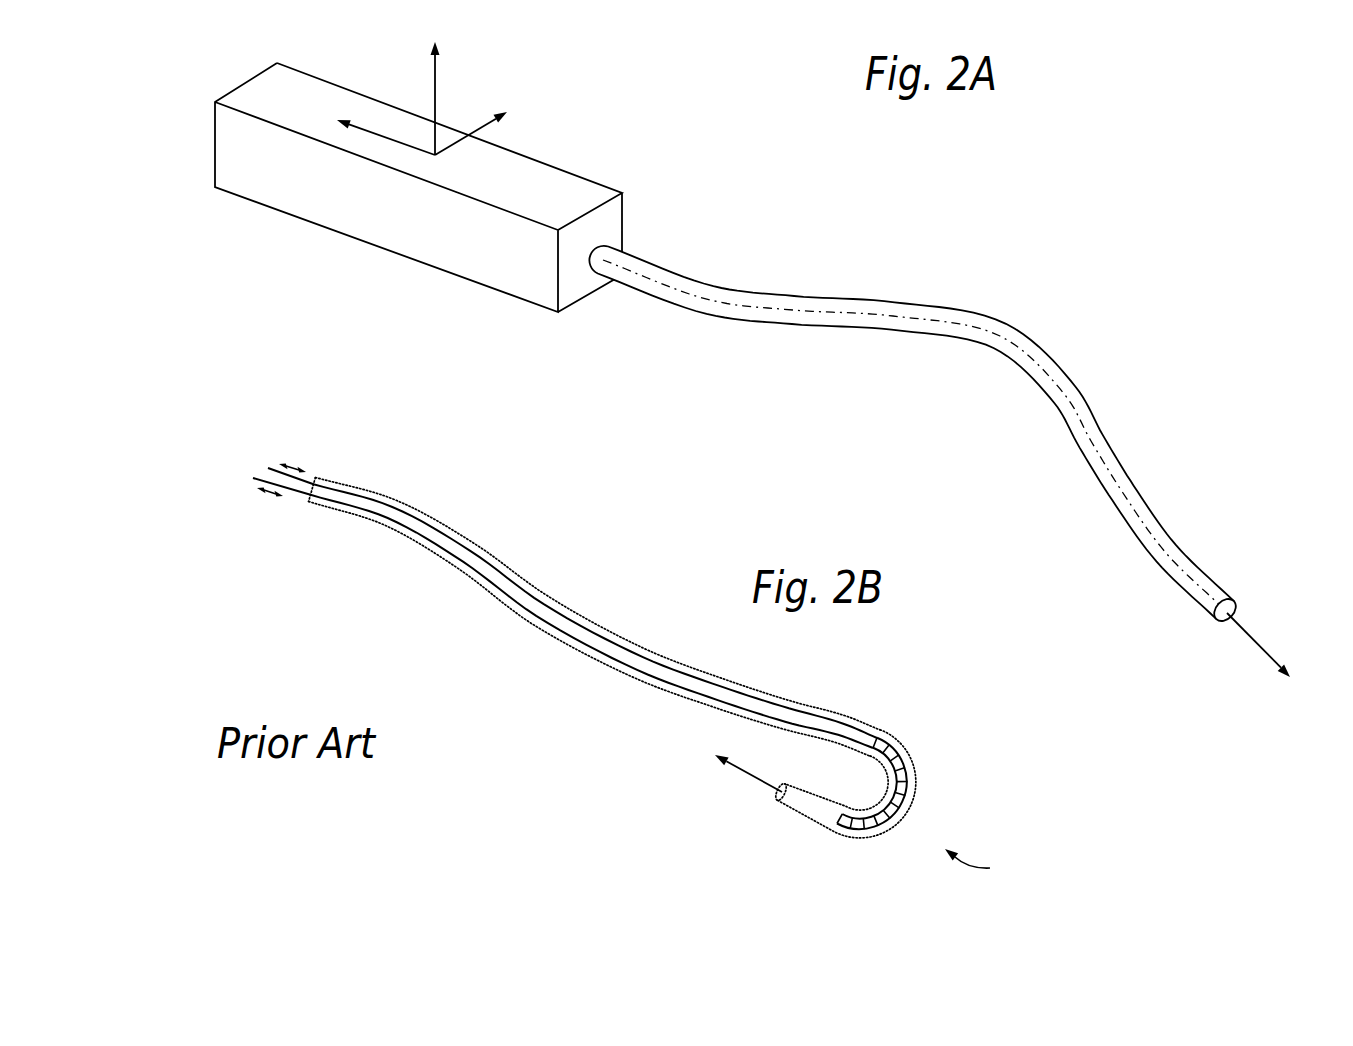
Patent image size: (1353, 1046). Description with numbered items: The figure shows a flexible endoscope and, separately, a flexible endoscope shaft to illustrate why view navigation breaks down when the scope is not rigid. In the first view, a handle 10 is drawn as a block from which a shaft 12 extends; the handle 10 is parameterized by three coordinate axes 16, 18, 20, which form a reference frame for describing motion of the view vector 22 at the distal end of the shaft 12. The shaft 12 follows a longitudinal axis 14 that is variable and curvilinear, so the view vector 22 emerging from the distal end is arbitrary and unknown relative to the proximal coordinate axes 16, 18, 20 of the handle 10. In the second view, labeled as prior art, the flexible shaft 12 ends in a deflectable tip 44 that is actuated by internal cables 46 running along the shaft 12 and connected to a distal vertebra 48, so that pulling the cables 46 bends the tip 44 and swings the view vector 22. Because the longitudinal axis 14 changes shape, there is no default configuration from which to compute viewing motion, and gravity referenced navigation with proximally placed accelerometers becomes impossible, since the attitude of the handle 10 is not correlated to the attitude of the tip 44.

In FIG. 2A, the handle 10 is at (390, 242).
In FIG. 2A, the shaft 12 is at (1015, 350).
In FIG. 2B, the shaft 12 is at (593, 657).
In FIG. 2A, the longitudinal axis 14 is at (1155, 542).
In FIG. 2A, the coordinate axis 16 is at (453, 143).
In FIG. 2A, the coordinate axis 18 is at (387, 137).
In FIG. 2A, the coordinate axis 20 is at (437, 77).
In FIG. 2A, the view vector 22 is at (1255, 645).
In FIG. 2B, the view vector 22 is at (738, 772).
In FIG. 2B, the deflectable tip 44 is at (982, 870).
In FIG. 2B, the cables 46 is at (484, 552).
In FIG. 2B, the distal vertebra 48 is at (910, 779).